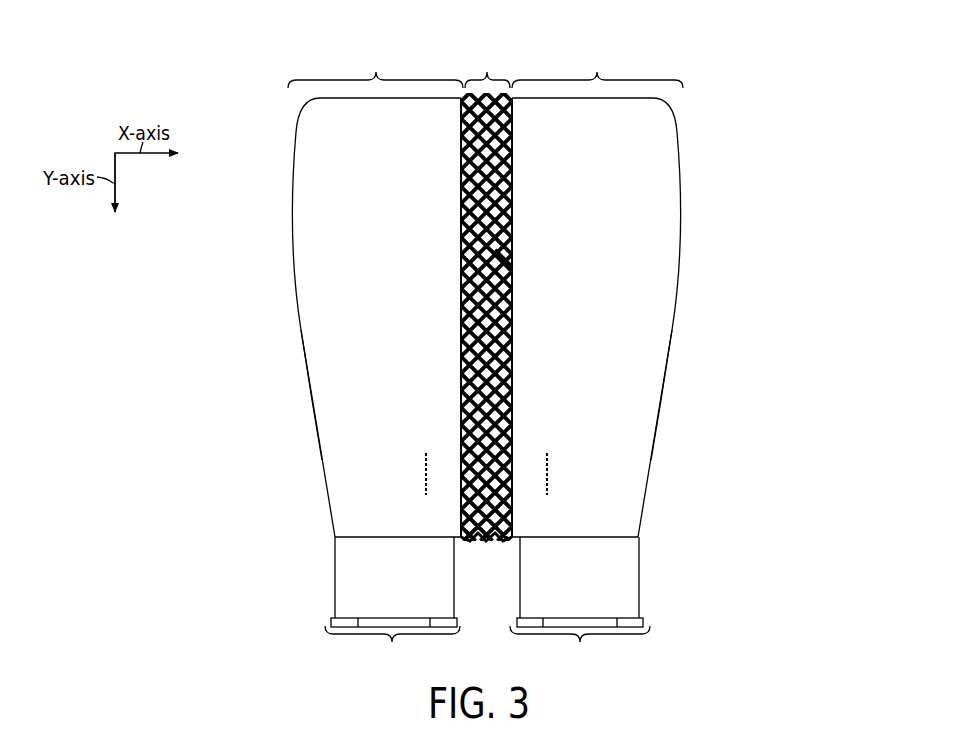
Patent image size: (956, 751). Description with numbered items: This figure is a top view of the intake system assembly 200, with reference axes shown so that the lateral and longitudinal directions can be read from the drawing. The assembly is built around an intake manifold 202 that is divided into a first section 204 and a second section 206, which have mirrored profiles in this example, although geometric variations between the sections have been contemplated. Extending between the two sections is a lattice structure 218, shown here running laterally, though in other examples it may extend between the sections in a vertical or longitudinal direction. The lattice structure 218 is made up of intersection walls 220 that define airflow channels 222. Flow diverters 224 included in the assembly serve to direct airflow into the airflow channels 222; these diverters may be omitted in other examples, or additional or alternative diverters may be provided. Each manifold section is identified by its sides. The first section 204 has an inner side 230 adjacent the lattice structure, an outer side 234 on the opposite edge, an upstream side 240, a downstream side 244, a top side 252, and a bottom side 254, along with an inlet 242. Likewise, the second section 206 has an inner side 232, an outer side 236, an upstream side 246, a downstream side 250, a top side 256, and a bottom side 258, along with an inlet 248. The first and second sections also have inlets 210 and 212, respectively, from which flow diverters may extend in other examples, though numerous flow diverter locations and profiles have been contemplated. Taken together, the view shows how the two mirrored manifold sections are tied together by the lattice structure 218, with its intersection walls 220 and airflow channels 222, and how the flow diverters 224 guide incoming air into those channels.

The intake system assembly 200 is at (770, 52).
The intake manifold 202 is at (268, 103).
The first section 204 is at (375, 66).
The second section 206 is at (597, 66).
The inlet 210 is at (410, 596).
The inlet 212 is at (599, 596).
The lattice structure 218 is at (487, 66).
The intersection walls 220 is at (488, 542).
The airflow channels 222 is at (470, 422).
The flow diverters 224 is at (424, 462).
The inner side 230 is at (464, 238).
The inner side 232 is at (510, 288).
The outer side 234 is at (260, 283).
The outer side 236 is at (725, 280).
The upstream side 240 is at (356, 652).
The inlet 242 is at (392, 643).
The downstream side 244 is at (408, 52).
The upstream side 246 is at (610, 660).
The inlet 248 is at (580, 643).
The downstream side 250 is at (568, 52).
The top side 252 is at (327, 362).
The bottom side 254 is at (296, 465).
The top side 256 is at (637, 348).
The bottom side 258 is at (670, 453).